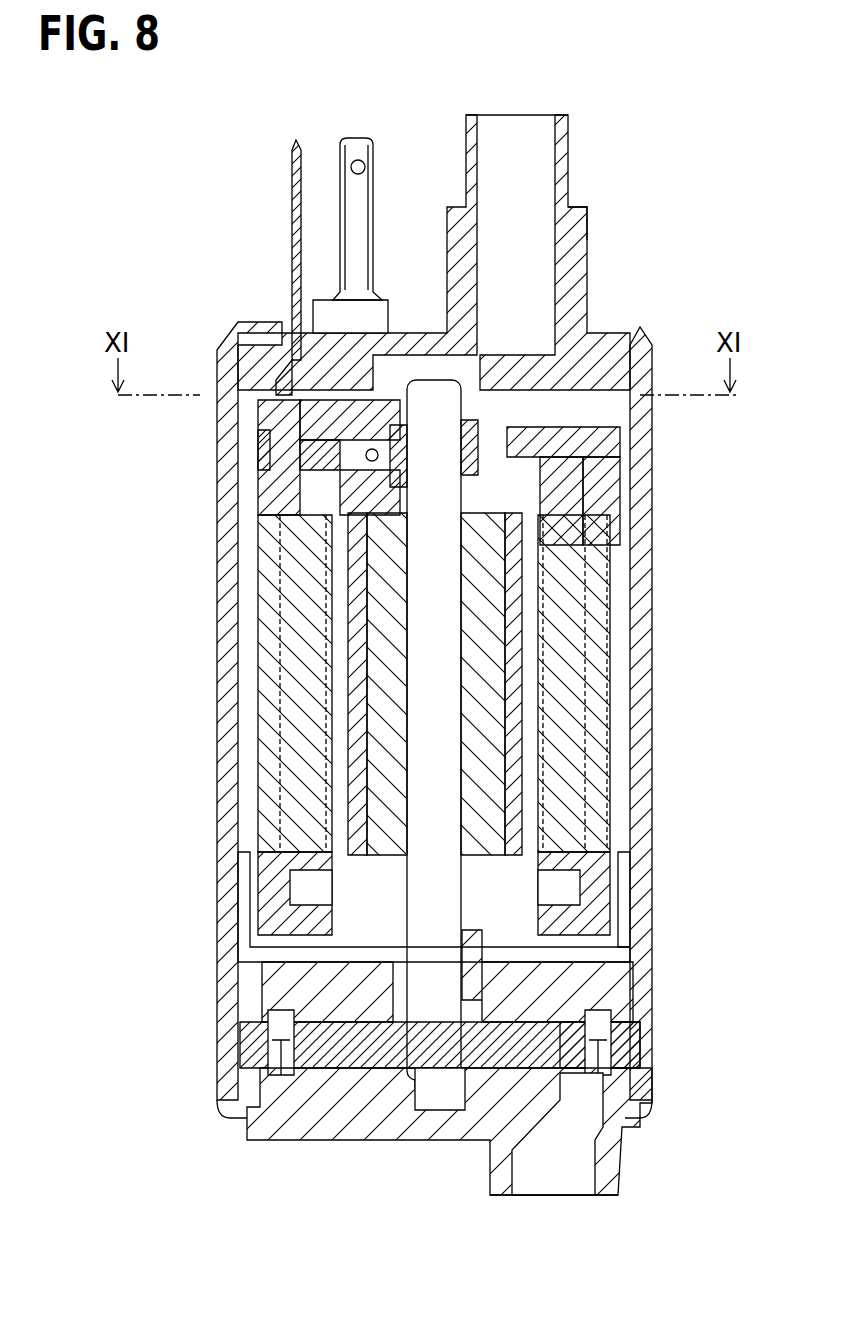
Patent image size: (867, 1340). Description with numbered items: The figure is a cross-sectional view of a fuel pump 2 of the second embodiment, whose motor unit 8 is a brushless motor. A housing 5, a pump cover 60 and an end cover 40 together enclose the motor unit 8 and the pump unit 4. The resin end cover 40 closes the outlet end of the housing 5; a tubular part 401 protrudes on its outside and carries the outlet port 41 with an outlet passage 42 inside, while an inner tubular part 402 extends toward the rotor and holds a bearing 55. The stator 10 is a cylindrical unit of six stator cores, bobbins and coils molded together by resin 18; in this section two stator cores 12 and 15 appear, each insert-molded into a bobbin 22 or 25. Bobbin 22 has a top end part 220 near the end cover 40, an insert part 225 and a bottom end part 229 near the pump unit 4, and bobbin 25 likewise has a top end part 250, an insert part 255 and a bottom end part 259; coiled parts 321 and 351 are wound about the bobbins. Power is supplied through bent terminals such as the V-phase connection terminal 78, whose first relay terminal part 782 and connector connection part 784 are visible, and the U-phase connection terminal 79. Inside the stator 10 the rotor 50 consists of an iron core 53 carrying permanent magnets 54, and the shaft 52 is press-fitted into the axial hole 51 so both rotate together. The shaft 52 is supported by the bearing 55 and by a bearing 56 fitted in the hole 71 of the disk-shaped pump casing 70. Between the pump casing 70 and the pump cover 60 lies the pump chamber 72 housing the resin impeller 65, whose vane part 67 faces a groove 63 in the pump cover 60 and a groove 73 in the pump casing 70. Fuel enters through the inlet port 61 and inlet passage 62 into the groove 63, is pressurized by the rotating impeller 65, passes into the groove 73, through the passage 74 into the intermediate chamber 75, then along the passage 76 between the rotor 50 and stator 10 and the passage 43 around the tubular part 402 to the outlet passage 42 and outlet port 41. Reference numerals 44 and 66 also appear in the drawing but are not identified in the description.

The fuel pump 2 is at (202, 118).
The pump unit 4 is at (176, 1104).
The housing 5 is at (220, 818).
The motor unit 8 is at (136, 614).
The stator 10 is at (630, 624).
The stator core 12 is at (300, 640).
The stator core 15 is at (590, 690).
The resin 18 is at (600, 447).
The coil bobbin 22 is at (232, 513).
The coil bobbin 25 is at (595, 484).
The end cover 40 is at (395, 345).
The outlet port 41 is at (520, 115).
The outlet passage 42 is at (525, 265).
The passage 43 is at (500, 420).
The housing body 44 is at (250, 585).
The rotor 50 is at (350, 705).
The axial hole 51 is at (410, 742).
The shaft 52 is at (425, 795).
The iron core 53 is at (490, 772).
The permanent magnets 54 is at (560, 830).
The bearing 55 is at (350, 480).
The bearing 56 is at (600, 975).
The pump cover 60 is at (322, 1130).
The inlet port 61 is at (556, 1195).
The inlet passage 62 is at (590, 1112).
The groove 63 is at (275, 1100).
The impeller 65 is at (605, 1060).
The shaft end nut 66 is at (440, 1090).
The vane part 67 is at (600, 1030).
The pump casing 70 is at (350, 1100).
The hole 71 is at (240, 950).
The pump chamber 72 is at (245, 1050).
The groove 73 is at (270, 1030).
The passage 74 is at (275, 970).
The intermediate chamber 75 is at (565, 942).
The passage 76 is at (555, 660).
The V-phase connection terminal 78 is at (292, 152).
The U-phase connection terminal 79 is at (356, 138).
The top end part 220 is at (260, 455).
The insert part 225 is at (290, 625).
The bottom end part 229 is at (290, 870).
The top end part 250 is at (600, 520).
The insert part 255 is at (620, 728).
The bottom end part 259 is at (640, 873).
The coiled part 321 is at (305, 888).
The coiled part 351 is at (560, 875).
The tubular part 401 is at (580, 225).
The tubular part 402 is at (330, 375).
The first relay terminal part 782 is at (262, 432).
The connector connection part 784 is at (292, 235).